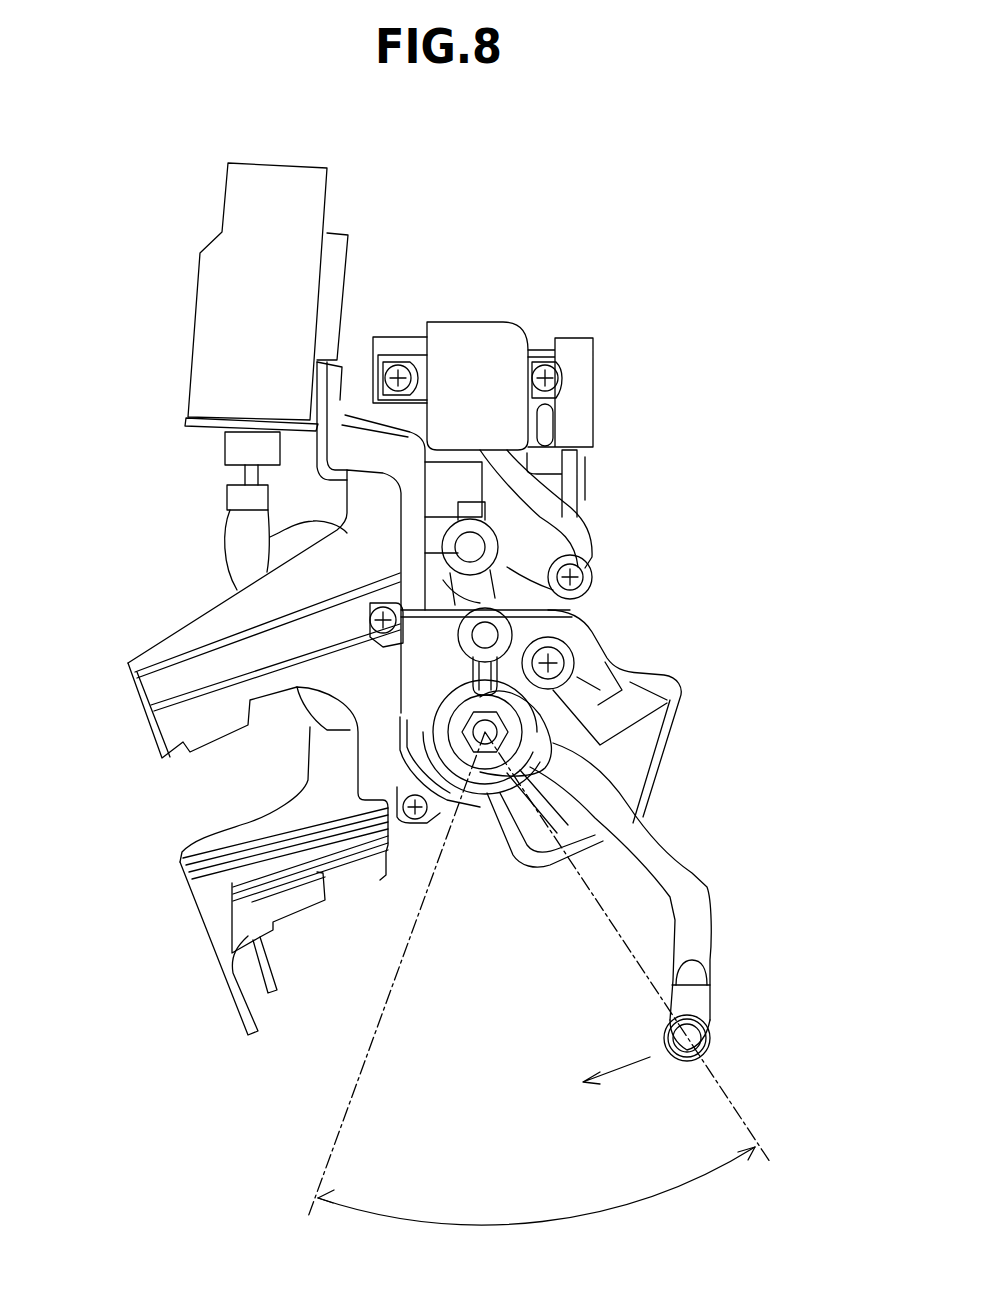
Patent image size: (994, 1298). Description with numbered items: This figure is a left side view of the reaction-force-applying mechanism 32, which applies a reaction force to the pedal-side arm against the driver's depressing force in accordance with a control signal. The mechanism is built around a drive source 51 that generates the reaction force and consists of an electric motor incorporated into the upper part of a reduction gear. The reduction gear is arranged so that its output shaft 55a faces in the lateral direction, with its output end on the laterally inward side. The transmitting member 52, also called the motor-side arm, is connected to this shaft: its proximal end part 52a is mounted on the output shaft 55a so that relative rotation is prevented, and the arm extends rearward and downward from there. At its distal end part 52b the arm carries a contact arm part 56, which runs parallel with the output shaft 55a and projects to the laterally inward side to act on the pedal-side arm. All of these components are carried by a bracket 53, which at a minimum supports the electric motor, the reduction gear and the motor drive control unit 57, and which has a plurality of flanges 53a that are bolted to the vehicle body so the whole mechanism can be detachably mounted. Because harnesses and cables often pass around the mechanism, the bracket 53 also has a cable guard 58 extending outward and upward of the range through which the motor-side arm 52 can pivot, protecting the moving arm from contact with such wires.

The reaction-force-applying mechanism 32 is at (150, 138).
The motor drive control unit 57 is at (230, 301).
The bracket 53 is at (185, 637).
The flanges 53a is at (148, 702).
The drive source 51 is at (535, 567).
The output shaft 55a is at (527, 647).
The proximal end part 52a is at (523, 727).
The cable guard 58 is at (645, 735).
The transmitting member 52 is at (690, 865).
The distal end part 52b is at (693, 1000).
The contact arm part 56 is at (710, 1033).